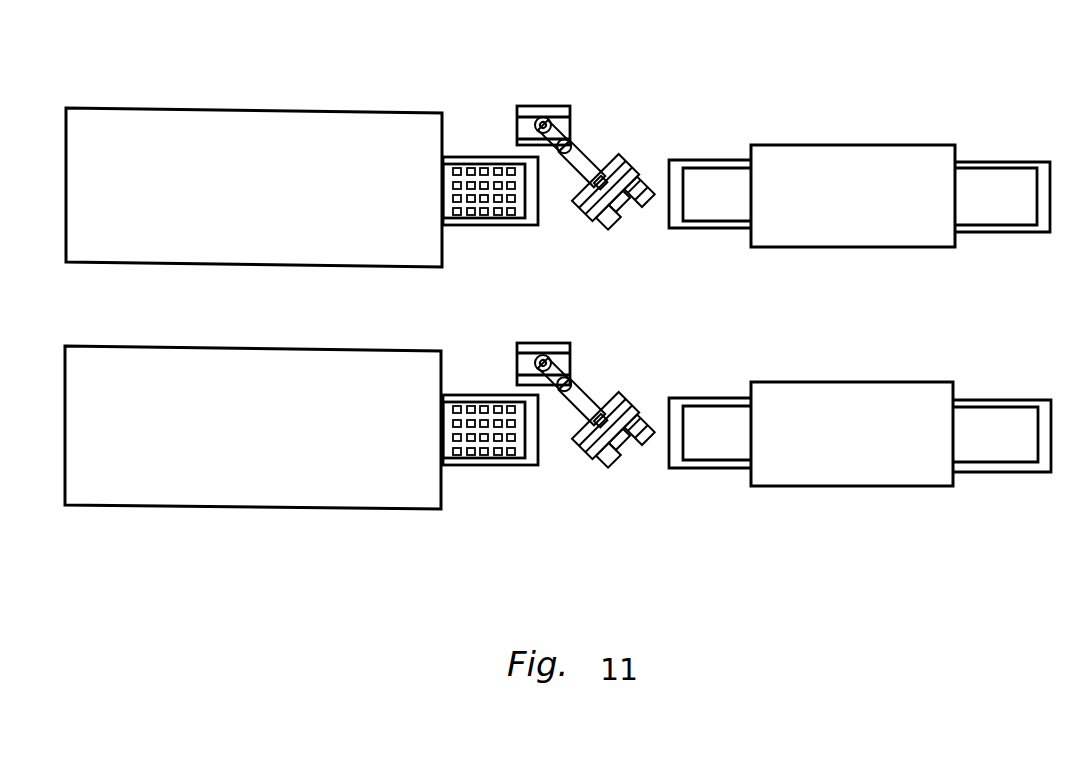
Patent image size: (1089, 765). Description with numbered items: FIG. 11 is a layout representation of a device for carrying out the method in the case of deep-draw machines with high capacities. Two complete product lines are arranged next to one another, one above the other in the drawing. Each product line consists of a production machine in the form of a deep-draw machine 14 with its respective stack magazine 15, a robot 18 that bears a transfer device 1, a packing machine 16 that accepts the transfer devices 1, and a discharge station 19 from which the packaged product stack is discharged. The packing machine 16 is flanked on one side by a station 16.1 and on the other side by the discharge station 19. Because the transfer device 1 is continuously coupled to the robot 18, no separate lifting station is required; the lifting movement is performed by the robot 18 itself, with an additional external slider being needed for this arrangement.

The transfer device 1 is at (532, 112).
The deep-draw machine 14 is at (160, 128).
The stack magazine 15 is at (488, 203).
The packing machine 16 is at (889, 170).
The loading station 16.1 is at (732, 175).
The robot 18 is at (615, 155).
The discharge station 19 is at (1004, 188).